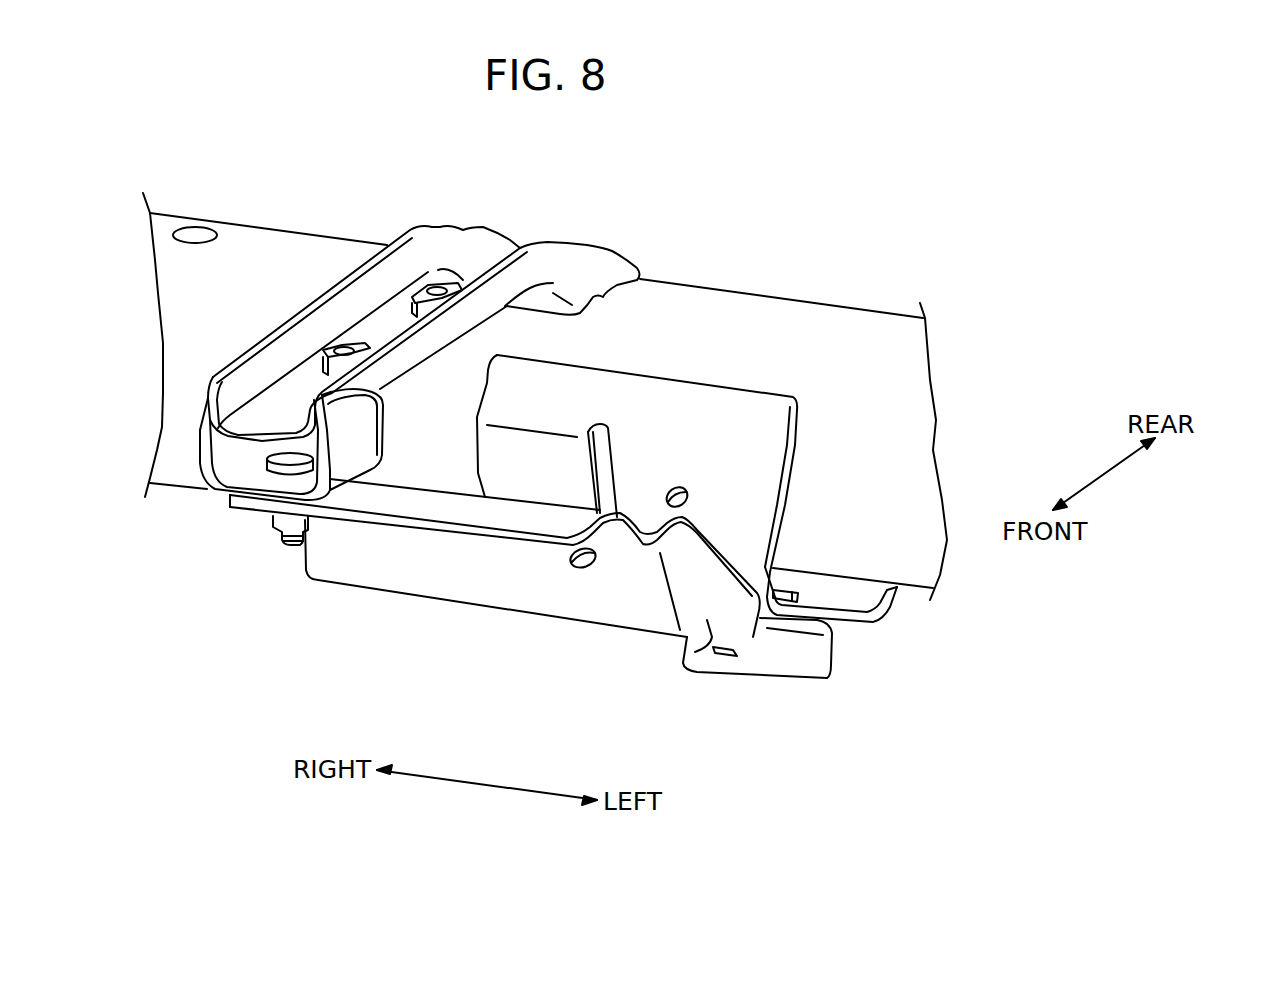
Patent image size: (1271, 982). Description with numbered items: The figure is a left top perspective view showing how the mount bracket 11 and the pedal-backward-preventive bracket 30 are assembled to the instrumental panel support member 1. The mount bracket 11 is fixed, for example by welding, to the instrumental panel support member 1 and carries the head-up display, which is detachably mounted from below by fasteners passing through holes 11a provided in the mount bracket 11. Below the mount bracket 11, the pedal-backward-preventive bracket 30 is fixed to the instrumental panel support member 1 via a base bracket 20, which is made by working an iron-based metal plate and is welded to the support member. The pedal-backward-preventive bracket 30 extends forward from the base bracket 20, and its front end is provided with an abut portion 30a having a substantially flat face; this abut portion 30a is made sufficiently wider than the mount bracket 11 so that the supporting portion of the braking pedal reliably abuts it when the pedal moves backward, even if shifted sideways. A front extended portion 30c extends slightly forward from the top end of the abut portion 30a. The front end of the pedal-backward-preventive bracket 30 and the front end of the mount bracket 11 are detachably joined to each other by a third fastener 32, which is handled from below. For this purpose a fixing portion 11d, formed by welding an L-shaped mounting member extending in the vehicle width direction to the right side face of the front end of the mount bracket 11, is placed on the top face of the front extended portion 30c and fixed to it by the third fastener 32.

The instrumental panel support member 1 is at (782, 311).
The mount bracket 11 is at (541, 247).
The hole 11a is at (347, 347).
The fixing portion 11d is at (355, 445).
The base bracket 20 is at (877, 624).
The pedal-backward-preventive bracket 30 is at (531, 553).
The abut portion 30a is at (437, 587).
The front extended portion 30c is at (497, 542).
The third fastener 32 is at (273, 523).